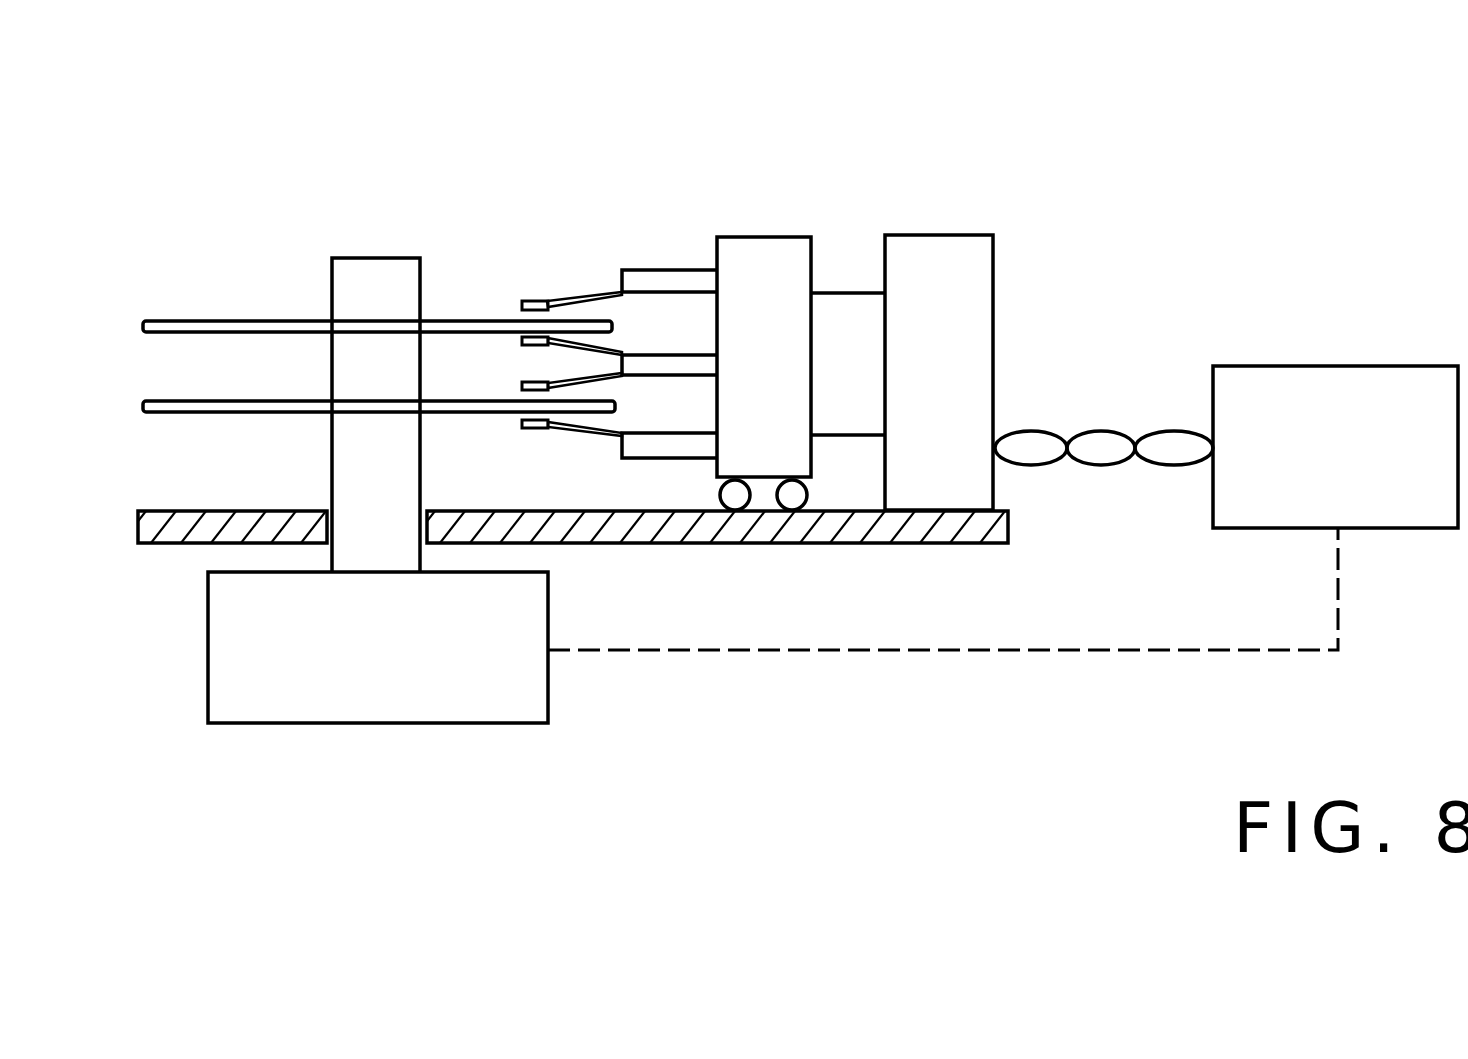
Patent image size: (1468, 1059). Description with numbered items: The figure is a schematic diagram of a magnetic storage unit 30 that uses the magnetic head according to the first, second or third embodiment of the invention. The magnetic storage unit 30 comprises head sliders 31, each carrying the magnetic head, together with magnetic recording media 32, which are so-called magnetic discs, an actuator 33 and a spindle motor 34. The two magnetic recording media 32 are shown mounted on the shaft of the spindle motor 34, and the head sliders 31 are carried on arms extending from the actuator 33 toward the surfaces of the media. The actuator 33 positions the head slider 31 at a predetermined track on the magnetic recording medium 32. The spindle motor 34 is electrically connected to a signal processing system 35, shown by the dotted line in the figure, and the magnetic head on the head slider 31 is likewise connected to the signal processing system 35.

The magnetic storage unit 30 is at (714, 144).
The head slider 31 is at (532, 300).
The magnetic recording medium 32 is at (220, 320).
The actuator 33 is at (762, 237).
The spindle motor 34 is at (548, 585).
The signal processing system 35 is at (1393, 364).